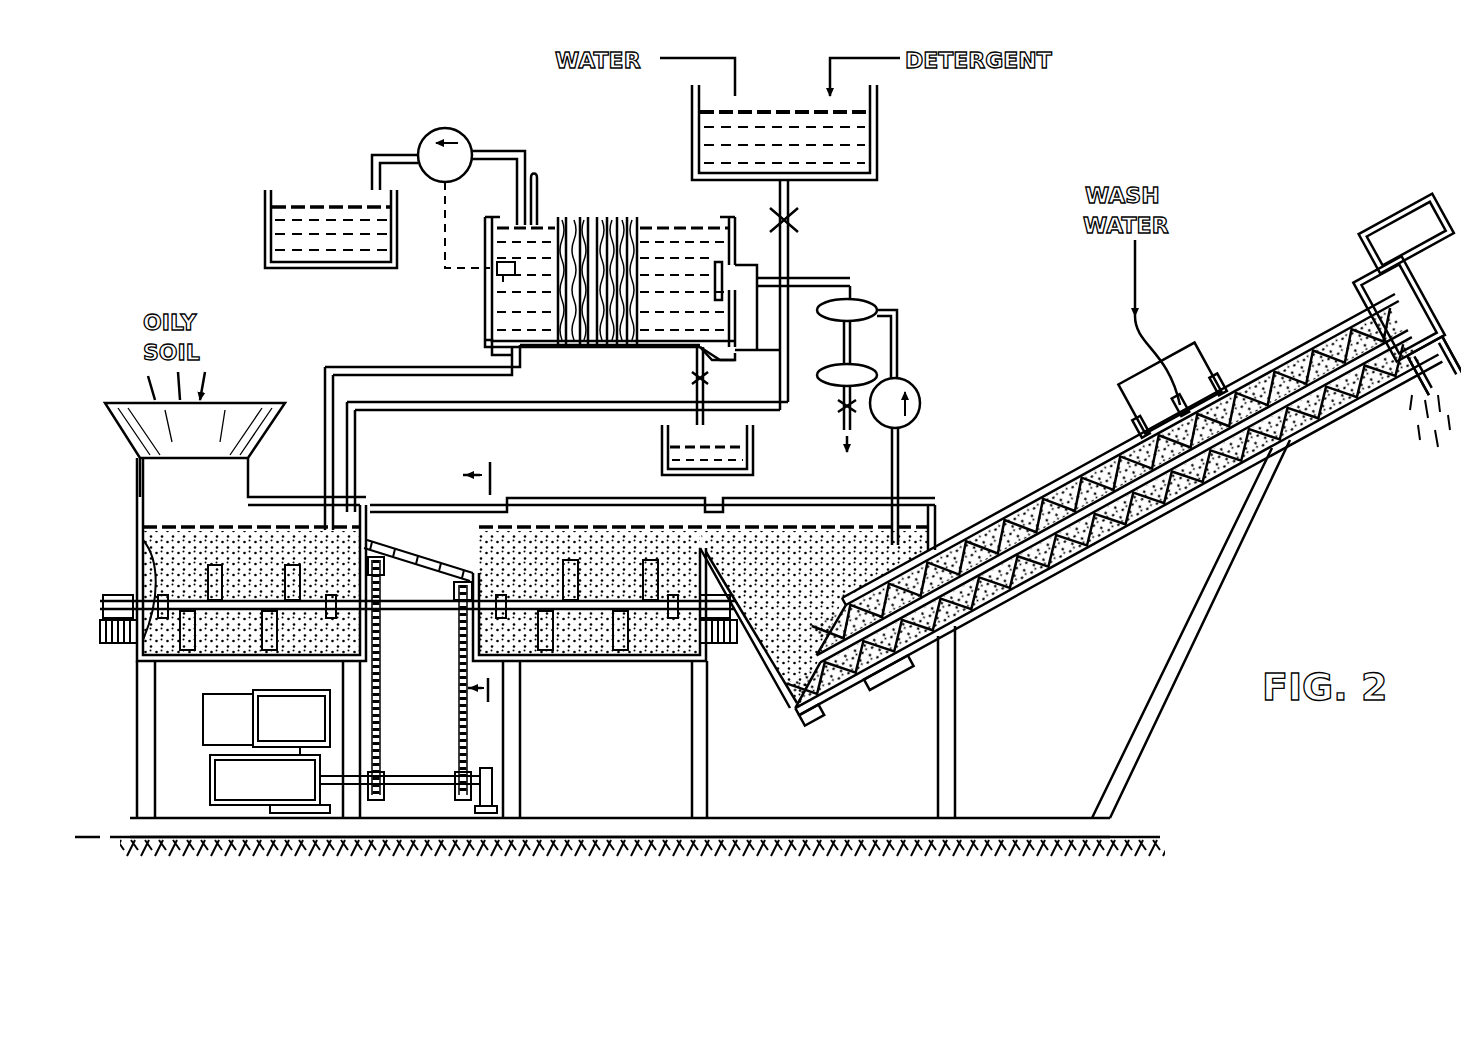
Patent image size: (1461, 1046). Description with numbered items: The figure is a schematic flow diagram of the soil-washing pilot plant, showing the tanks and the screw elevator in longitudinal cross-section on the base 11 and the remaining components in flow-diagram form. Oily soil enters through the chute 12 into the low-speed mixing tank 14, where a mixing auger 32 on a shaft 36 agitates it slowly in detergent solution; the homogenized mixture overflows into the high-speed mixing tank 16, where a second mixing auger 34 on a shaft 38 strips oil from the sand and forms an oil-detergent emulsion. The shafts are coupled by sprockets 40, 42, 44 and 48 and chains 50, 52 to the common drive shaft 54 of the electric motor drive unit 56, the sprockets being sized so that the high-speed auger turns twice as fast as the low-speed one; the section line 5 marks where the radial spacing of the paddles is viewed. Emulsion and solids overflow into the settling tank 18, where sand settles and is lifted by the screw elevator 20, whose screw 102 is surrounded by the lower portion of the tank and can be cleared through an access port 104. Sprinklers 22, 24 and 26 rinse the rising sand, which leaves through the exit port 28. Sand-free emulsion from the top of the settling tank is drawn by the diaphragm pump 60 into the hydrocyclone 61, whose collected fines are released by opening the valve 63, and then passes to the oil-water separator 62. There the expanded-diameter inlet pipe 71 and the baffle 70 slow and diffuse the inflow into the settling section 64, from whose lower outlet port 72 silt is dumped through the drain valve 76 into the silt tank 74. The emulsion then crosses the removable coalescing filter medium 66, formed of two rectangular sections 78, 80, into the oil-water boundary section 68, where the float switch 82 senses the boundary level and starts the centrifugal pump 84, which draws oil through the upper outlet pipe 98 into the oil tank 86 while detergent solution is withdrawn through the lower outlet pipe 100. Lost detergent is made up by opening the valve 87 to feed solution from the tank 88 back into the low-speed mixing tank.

The base 11 is at (1108, 832).
The chute 12 is at (230, 392).
The low-speed mixing tank 14 is at (262, 510).
The high-speed mixing tank 16 is at (548, 515).
The settling tank 18 is at (905, 515).
The screw elevator 20 is at (1055, 490).
The sprinkler 22 is at (1143, 438).
The sprinkler 24 is at (1180, 410).
The sprinkler 26 is at (1222, 392).
The exit port 28 is at (1410, 395).
The mixing auger 32 is at (200, 648).
The mixing auger 34 is at (636, 640).
The shaft 36 is at (137, 560).
The shaft 38 is at (592, 640).
The sprocket 40 is at (388, 592).
The sprocket 42 is at (380, 800).
The driven sprocket 44 is at (455, 615).
The sprocket 48 is at (462, 790).
The chain 50 is at (383, 672).
The chain 52 is at (458, 708).
The common drive shaft 54 is at (432, 785).
The electric motor drive unit 56 is at (195, 760).
The section line 5 is at (494, 591).
The diaphragm pump 60 is at (918, 395).
The hydrocyclone 61 is at (862, 300).
The oil-water separator 62 is at (640, 358).
The valve 63 is at (840, 408).
The settling section 64 is at (694, 302).
The removable section of coalescing filter medium 66 is at (608, 193).
The oil-water boundary section 68 is at (542, 312).
The baffle 70 is at (725, 268).
The expanded-diameter inlet pipe 71 is at (742, 290).
The lower outlet port 72 is at (715, 358).
The silt tank 74 is at (742, 470).
The drain valve 76 is at (692, 384).
The rectangular section 78 is at (584, 228).
The rectangular section 80 is at (620, 230).
The float switch 82 is at (497, 288).
The centrifugal pump 84 is at (460, 135).
The oil tank 86 is at (265, 224).
The valve 87 is at (798, 222).
The tank 88 is at (880, 172).
The upper outlet pipe 98 is at (538, 178).
The lower outlet pipe 100 is at (485, 344).
The screw 102 is at (862, 665).
The access port 104 is at (836, 712).